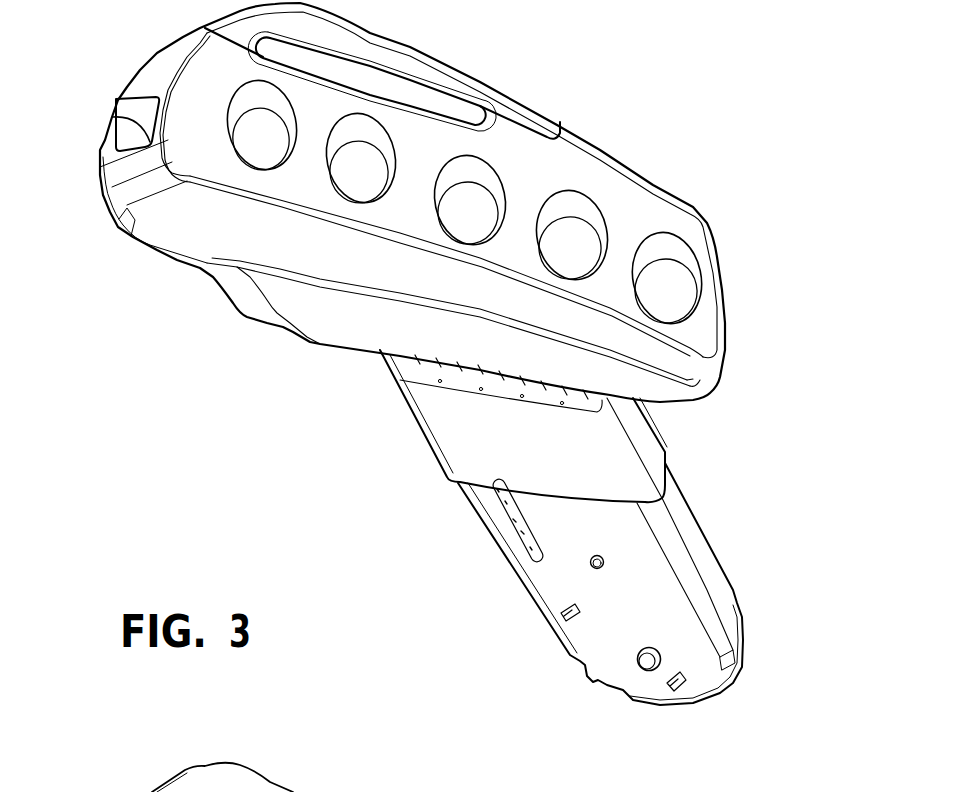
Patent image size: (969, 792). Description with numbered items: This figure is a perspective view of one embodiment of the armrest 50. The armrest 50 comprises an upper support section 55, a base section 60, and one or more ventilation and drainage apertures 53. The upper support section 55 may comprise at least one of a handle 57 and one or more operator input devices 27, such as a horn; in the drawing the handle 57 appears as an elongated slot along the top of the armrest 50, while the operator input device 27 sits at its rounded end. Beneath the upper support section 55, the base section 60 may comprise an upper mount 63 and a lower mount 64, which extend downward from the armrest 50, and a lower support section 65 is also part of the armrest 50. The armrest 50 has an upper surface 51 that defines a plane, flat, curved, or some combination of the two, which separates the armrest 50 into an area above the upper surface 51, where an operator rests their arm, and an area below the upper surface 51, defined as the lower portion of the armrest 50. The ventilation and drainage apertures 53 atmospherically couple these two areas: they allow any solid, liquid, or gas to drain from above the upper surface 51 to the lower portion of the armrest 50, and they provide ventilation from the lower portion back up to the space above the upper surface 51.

The operator input device 27 is at (127, 113).
The armrest 50 is at (297, 498).
The upper surface 51 is at (215, 111).
The ventilation and drainage apertures 53 is at (600, 203).
The upper support section 55 is at (710, 368).
The handle 57 is at (417, 50).
The base section 60 is at (746, 462).
The upper mount 63 is at (422, 428).
The lower mount 64 is at (515, 567).
The lower support section 65 is at (688, 398).